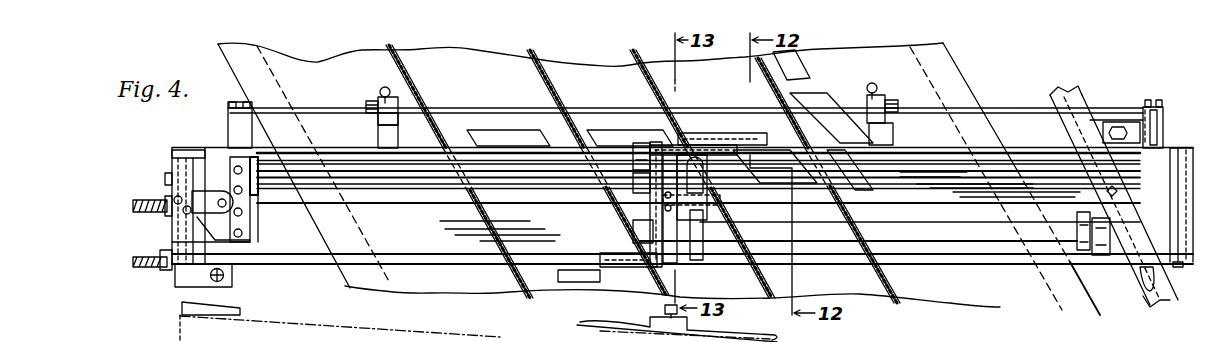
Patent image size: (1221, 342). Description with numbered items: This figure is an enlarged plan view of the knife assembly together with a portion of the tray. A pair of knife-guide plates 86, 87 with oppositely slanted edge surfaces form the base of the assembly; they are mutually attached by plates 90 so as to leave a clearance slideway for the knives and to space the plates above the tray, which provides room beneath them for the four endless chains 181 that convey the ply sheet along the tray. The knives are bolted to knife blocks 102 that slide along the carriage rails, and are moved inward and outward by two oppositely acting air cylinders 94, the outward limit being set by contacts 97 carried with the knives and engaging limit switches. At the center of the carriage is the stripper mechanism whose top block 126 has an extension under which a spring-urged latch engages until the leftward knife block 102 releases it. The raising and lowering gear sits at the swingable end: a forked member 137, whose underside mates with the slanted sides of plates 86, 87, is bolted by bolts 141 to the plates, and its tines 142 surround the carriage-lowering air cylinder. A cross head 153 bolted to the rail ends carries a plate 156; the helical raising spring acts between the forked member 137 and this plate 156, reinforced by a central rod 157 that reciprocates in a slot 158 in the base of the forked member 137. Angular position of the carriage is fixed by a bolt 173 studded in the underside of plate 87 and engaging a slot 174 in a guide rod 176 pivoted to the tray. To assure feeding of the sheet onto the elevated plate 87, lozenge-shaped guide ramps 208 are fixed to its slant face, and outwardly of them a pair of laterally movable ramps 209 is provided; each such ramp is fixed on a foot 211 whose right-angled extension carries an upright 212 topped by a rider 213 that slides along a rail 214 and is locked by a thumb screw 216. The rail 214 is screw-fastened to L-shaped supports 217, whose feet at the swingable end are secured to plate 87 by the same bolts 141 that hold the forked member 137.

The plate 86 is at (448, 245).
The plate 87 is at (928, 175).
The plates 90 is at (330, 232).
The air cylinders 94 is at (450, 140).
The contacts 97 is at (700, 135).
The blocks 102 is at (695, 130).
The block 126 is at (708, 190).
The forked member 137 is at (210, 165).
The bolts 141 is at (243, 233).
The tines 142 is at (172, 170).
The cross head 153 is at (172, 155).
The plate 156 is at (165, 220).
The central rod 157 is at (235, 208).
The slot 158 is at (165, 180).
The bolt 173 is at (1100, 190).
The slot 174 is at (1160, 287).
The guide rod 176 is at (1170, 304).
The endless chains 181 is at (515, 273).
The guide ramps 208 is at (497, 135).
The laterally movable ramps 209 is at (420, 125).
The foot 211 is at (378, 134).
The upright 212 is at (366, 102).
The rider 213 is at (395, 100).
The rail 214 is at (1022, 103).
The thumb screw 216 is at (385, 87).
The L-shaped supports 217 is at (242, 128).